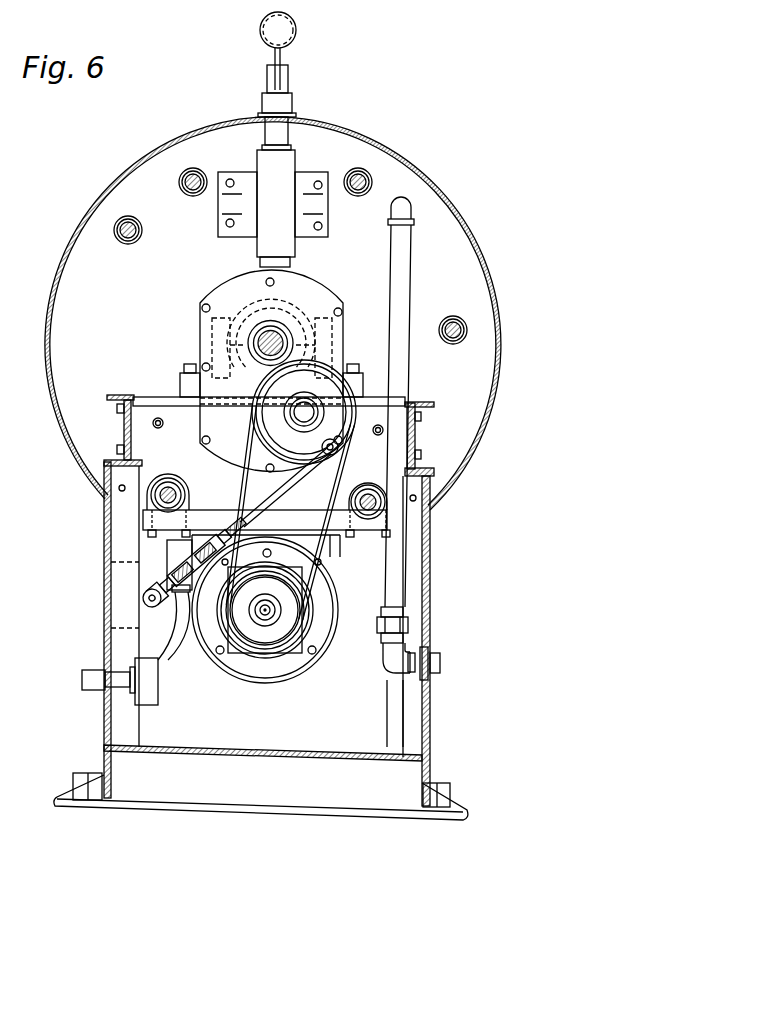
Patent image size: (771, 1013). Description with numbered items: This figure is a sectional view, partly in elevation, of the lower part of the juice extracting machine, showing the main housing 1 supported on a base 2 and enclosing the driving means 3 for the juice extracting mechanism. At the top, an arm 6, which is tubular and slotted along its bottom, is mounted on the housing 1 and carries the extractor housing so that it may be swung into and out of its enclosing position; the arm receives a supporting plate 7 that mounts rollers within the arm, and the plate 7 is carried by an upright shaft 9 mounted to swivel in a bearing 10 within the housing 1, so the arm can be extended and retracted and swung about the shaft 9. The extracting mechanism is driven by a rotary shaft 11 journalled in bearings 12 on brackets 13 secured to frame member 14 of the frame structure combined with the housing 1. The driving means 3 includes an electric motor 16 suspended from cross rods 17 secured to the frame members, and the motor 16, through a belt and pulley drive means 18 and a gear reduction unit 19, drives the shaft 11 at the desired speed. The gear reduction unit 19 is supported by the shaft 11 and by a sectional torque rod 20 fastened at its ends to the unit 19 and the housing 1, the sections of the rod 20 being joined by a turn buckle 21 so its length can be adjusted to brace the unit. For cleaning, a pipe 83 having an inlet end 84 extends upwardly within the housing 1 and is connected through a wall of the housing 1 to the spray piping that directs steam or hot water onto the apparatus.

The main housing 1 is at (499, 313).
The base 2 is at (462, 810).
The driving means 3 is at (253, 692).
The arm 6 is at (297, 30).
The supporting plate 7 is at (282, 58).
The upright shaft 9 is at (277, 135).
The bearing 10 is at (278, 172).
The rotary shaft 11 is at (262, 345).
The bearings 12 is at (305, 312).
The brackets 13 is at (157, 384).
The frame member 14 is at (465, 377).
The electric motor 16 is at (283, 636).
The cross rods 17 is at (170, 479).
The belt and pulley drive means 18 is at (306, 598).
The gear reduction unit 19 is at (382, 325).
The sectional torque rod 20 is at (292, 484).
The turn buckle 21 is at (213, 530).
The pipe 83 is at (403, 322).
The inlet end 84 is at (440, 663).